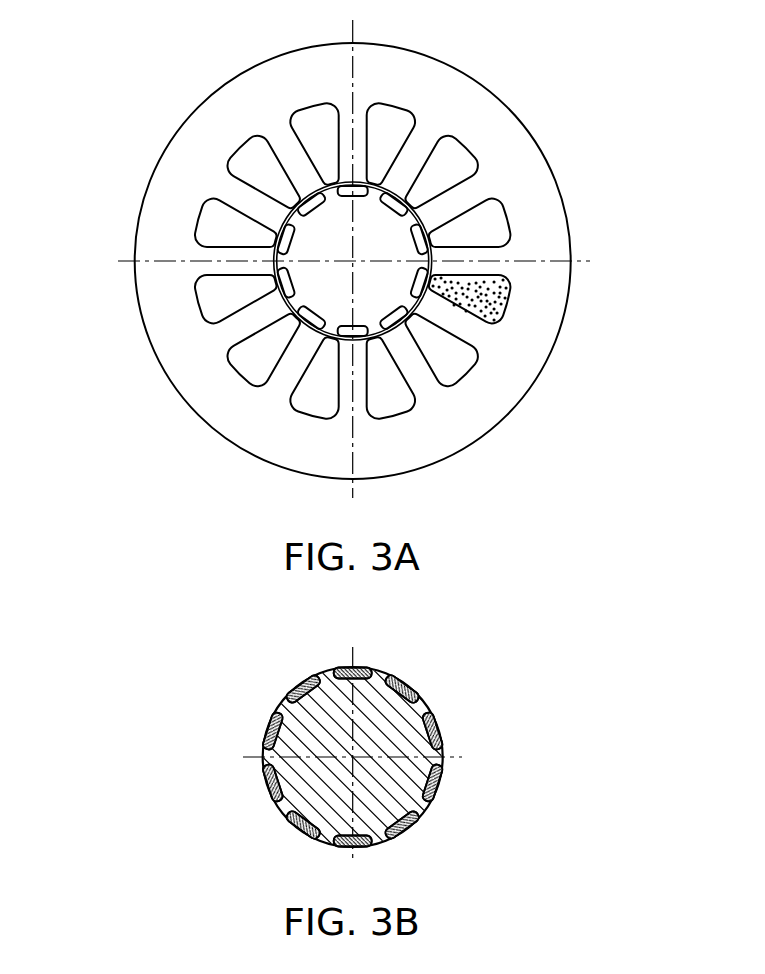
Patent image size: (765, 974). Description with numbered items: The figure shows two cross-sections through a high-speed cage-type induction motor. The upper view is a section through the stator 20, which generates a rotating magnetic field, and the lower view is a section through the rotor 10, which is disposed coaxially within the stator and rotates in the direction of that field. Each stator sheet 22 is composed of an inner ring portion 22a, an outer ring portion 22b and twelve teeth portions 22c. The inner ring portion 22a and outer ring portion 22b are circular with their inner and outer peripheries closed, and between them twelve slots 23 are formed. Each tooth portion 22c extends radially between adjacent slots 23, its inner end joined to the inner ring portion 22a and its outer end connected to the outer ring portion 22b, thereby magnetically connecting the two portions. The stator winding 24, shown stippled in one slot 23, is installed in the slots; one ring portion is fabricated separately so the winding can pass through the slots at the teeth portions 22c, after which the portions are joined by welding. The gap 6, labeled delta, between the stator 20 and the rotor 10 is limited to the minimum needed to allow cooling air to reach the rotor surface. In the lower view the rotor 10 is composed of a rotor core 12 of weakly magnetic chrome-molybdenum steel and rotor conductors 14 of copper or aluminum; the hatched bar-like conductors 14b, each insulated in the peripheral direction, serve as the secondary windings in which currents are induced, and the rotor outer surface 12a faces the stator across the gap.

In FIG. 3A, the stator 20 is at (175, 100).
In FIG. 3A, the stator sheet 22 is at (147, 185).
In FIG. 3A, the inner ring portion 22a is at (367, 178).
In FIG. 3A, the outer ring portion 22b is at (500, 130).
In FIG. 3A, the tooth portion 22c is at (413, 150).
In FIG. 3A, the gap 6 is at (270, 217).
In FIG. 3A, the rotor conductors 14 is at (420, 227).
In FIG. 3A, the rotor core 12 is at (370, 292).
In FIG. 3B, the rotor core 12 is at (393, 788).
In FIG. 3A, the stator winding 24 is at (507, 300).
In FIG. 3A, the slot 23 is at (245, 370).
In FIG. 3B, the rotor 10 is at (267, 695).
In FIG. 3B, the rotor outer surface 12a is at (425, 705).
In FIG. 3B, the bar-like conductor 14b is at (413, 690).